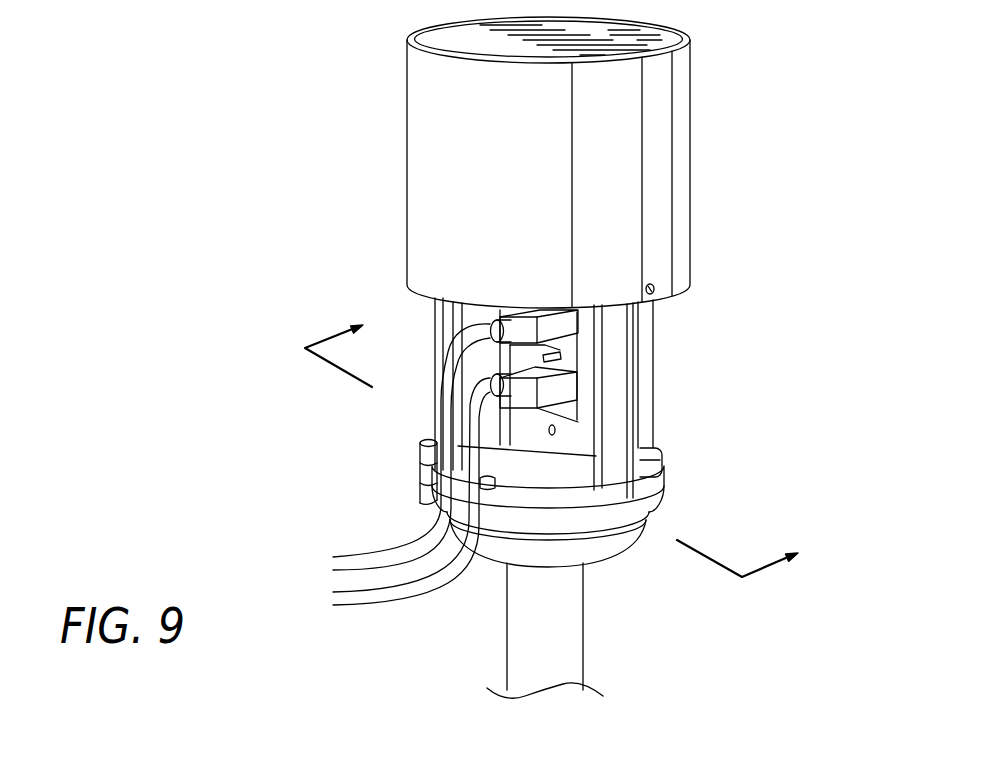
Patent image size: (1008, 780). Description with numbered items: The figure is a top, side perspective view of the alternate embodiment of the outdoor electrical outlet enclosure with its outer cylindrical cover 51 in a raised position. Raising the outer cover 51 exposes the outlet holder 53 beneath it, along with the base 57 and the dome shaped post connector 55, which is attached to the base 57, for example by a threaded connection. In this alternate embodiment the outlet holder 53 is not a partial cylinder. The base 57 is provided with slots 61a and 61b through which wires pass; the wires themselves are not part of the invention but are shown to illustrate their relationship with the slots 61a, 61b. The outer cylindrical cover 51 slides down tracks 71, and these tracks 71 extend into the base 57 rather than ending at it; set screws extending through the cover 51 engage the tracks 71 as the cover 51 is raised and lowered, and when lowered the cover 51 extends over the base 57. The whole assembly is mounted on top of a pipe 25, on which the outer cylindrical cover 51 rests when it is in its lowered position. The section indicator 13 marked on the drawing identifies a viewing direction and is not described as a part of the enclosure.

The section view indicator 13 is at (575, 442).
The pipe 25 is at (570, 648).
The outer cylindrical cover 51 is at (433, 178).
The outlet holder 53 is at (645, 380).
The dome shaped post connector 55 is at (592, 548).
The base 57 is at (655, 470).
The slot 61a is at (432, 460).
The slot 61b is at (487, 482).
The tracks 71 is at (630, 485).